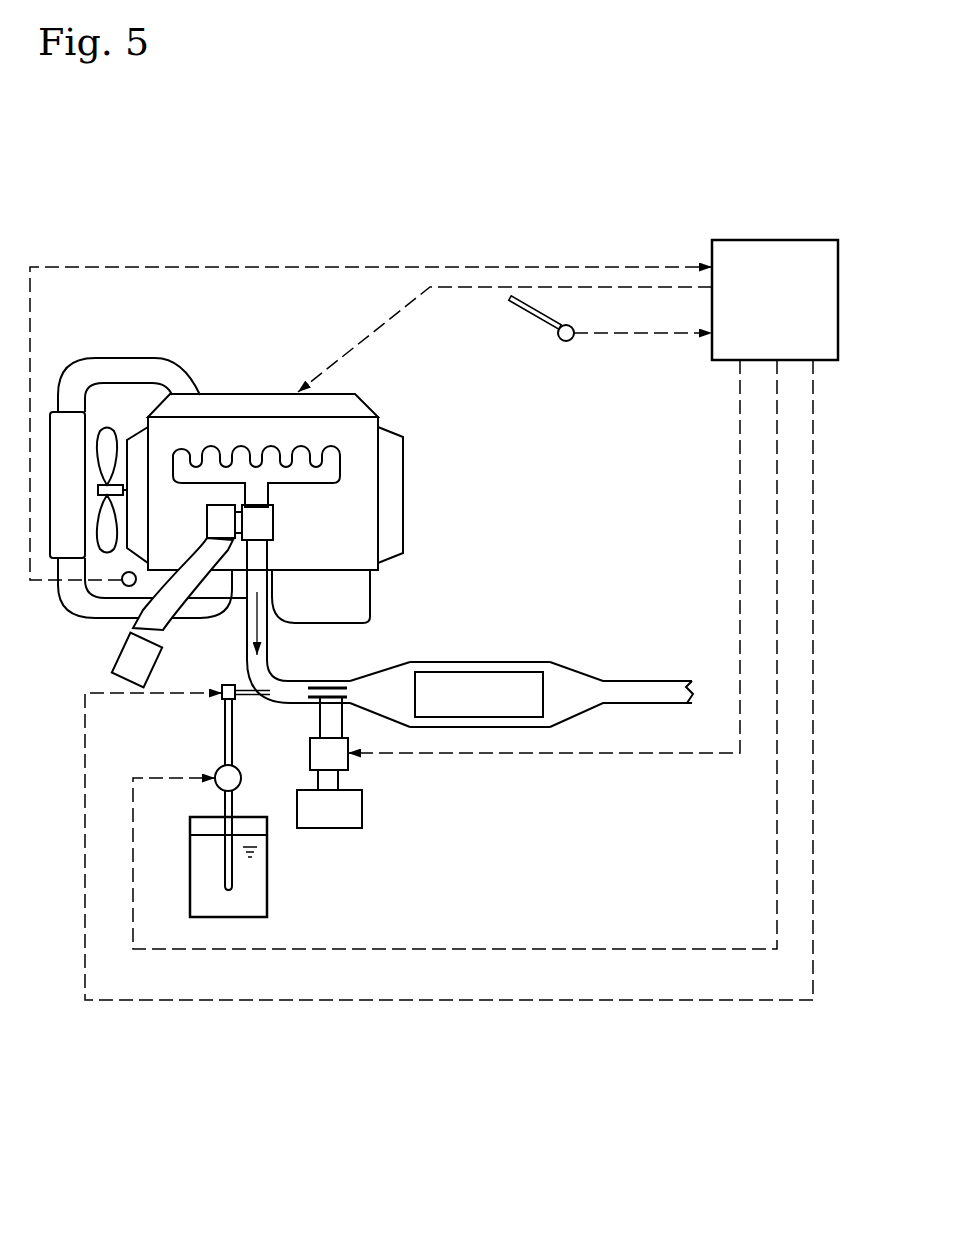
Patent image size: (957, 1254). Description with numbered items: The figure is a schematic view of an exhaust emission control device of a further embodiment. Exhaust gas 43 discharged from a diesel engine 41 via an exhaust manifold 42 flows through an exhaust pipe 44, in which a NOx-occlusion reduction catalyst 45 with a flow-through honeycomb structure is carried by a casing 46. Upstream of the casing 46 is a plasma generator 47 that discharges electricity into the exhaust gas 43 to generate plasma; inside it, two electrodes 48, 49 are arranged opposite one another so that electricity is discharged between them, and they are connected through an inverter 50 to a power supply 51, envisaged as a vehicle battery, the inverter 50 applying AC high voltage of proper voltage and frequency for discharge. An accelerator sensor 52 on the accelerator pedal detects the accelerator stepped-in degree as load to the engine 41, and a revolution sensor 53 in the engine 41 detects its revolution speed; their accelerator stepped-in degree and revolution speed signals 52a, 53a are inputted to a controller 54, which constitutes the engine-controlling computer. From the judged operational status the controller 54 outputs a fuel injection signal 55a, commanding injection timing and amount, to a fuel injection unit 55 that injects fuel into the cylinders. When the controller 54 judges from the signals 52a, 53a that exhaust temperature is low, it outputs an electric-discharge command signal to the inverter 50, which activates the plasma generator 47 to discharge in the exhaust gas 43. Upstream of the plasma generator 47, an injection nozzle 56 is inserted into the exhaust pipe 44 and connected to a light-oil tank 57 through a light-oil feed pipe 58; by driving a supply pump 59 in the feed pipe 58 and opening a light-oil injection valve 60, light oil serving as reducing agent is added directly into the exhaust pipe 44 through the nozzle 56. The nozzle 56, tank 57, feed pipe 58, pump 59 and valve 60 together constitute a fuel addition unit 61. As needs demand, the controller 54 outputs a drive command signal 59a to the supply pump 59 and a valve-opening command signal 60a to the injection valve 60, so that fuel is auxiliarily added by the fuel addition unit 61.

The diesel engine 41 is at (373, 403).
The exhaust manifold 42 is at (317, 472).
The exhaust gas 43 is at (247, 618).
The exhaust pipe 44 is at (270, 669).
The NOx-occlusion reduction catalyst 45 is at (498, 685).
The casing 46 is at (538, 663).
The plasma generator 47 is at (370, 667).
The electrode 48 is at (337, 687).
The electrode 49 is at (353, 707).
The inverter 50 is at (335, 762).
The power supply 51 is at (350, 818).
The accelerator sensor 52 is at (532, 322).
The accelerator stepped-in degree signal 52a is at (618, 337).
The revolution sensor 53 is at (124, 587).
The revolution speed signal 53a is at (305, 267).
The controller 54 is at (763, 250).
The fuel injection unit 55 is at (235, 402).
The fuel injection signal 55a is at (343, 355).
The injection nozzle 56 is at (245, 696).
The light-oil tank 57 is at (267, 900).
The light-oil feed pipe 58 is at (225, 746).
The supply pump 59 is at (222, 790).
The drive command signal 59a is at (637, 947).
The light-oil injection valve 60 is at (225, 688).
The valve-opening command signal 60a is at (447, 1001).
The fuel addition unit 61 is at (212, 706).